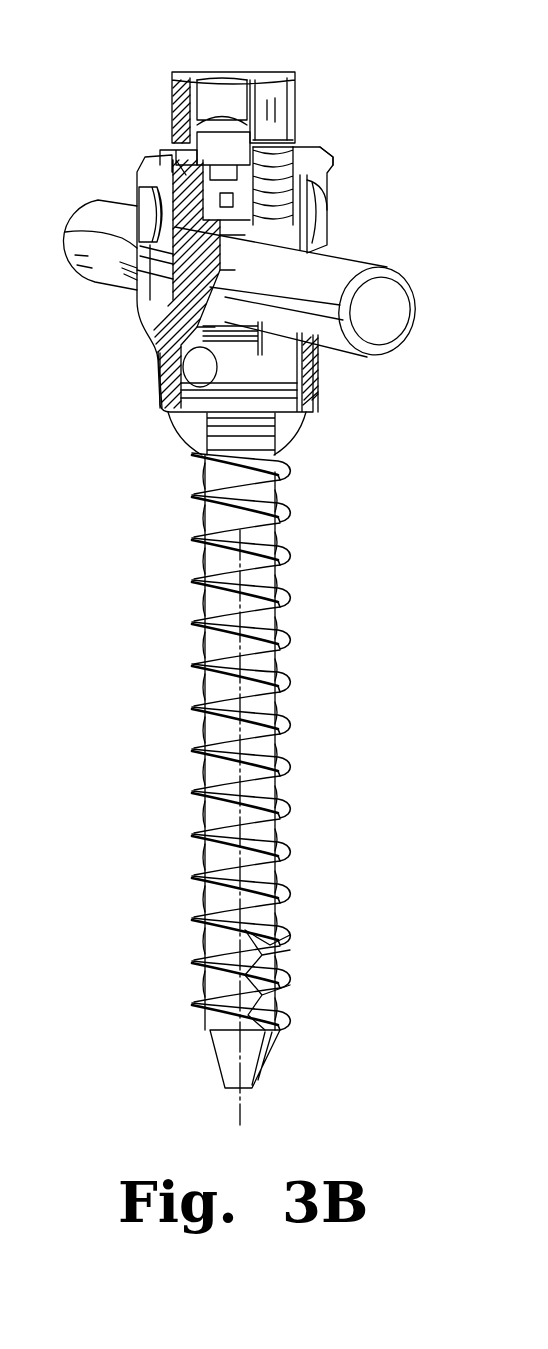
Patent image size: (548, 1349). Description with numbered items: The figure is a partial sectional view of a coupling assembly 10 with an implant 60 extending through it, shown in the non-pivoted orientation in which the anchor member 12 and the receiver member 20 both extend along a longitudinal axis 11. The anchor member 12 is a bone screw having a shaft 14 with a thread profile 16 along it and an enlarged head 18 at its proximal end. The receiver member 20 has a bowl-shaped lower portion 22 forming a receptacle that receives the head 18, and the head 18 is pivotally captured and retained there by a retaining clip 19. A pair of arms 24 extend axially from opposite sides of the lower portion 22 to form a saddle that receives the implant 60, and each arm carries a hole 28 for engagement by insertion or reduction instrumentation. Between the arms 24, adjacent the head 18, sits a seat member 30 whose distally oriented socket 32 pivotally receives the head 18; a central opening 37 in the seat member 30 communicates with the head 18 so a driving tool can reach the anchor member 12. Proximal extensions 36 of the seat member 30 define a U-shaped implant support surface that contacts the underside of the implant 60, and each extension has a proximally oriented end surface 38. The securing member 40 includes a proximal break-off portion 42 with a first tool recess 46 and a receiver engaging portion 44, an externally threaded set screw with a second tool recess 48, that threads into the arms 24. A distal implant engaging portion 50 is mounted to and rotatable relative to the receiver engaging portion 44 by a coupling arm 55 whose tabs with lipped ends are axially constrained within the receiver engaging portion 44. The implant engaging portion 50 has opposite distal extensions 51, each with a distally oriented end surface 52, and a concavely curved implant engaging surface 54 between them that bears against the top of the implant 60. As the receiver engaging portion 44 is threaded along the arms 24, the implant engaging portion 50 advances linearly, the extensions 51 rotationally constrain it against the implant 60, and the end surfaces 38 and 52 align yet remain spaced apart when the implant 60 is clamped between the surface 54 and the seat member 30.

The coupling assembly 10 is at (91, 538).
The longitudinal axis 11 is at (290, 708).
The anchor member 12 is at (294, 556).
The shaft 14 is at (290, 497).
The thread profile 16 is at (295, 597).
The head 18 is at (270, 424).
The retaining clip 19 is at (320, 408).
The receiver member 20 is at (330, 232).
The lower portion 22 is at (324, 382).
The arms 24 is at (320, 160).
The hole 28 is at (136, 196).
The seat member 30 is at (330, 350).
The socket 32 is at (200, 412).
The proximal extensions 36 is at (153, 331).
The central opening 37 is at (163, 363).
The proximally oriented end surface 38 is at (160, 278).
The securing member 40 is at (300, 80).
The break-off portion 42 is at (173, 97).
The receiver engaging portion 44 is at (312, 150).
The first tool recess 46 is at (224, 73).
The second tool recess 48 is at (184, 151).
The implant engaging portion 50 is at (68, 232).
The distal extensions 51 is at (200, 250).
The distally oriented end surface 52 is at (122, 264).
The implant engaging surface 54 is at (207, 265).
The coupling arm 55 is at (250, 165).
The implant 60 is at (86, 223).